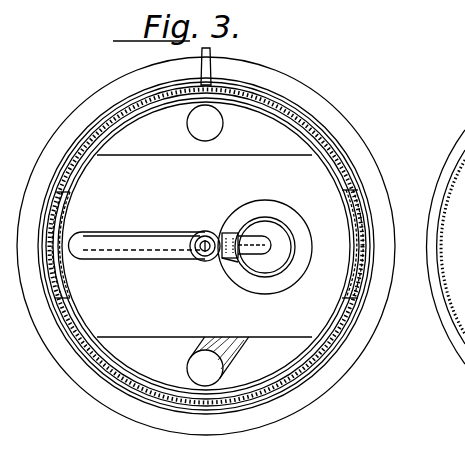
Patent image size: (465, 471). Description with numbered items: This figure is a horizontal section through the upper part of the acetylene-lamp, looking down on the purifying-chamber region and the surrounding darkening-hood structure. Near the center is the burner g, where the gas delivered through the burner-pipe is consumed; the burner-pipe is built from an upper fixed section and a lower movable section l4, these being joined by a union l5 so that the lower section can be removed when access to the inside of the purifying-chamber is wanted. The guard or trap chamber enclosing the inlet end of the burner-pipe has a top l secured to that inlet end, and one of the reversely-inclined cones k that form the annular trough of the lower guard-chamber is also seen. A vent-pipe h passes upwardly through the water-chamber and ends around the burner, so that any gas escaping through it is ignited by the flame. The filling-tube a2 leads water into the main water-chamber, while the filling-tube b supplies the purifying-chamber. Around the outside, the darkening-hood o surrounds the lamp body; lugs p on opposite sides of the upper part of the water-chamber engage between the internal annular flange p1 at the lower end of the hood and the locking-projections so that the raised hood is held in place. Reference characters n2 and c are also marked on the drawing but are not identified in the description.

The lug p is at (66, 274).
The spring n2 is at (397, 231).
The winding stem o is at (297, 118).
The internal annular flange p1 is at (140, 112).
The filling-tube a2 is at (223, 125).
The vent-pipe h is at (89, 236).
The burner g is at (202, 231).
The top of guard or trap chamber l is at (265, 268).
The reversely-inclined cone k is at (264, 216).
The union l5 is at (231, 232).
The lower movable section of burner-pipe l4 is at (267, 242).
The arm c is at (240, 259).
The filling-tube b is at (236, 345).